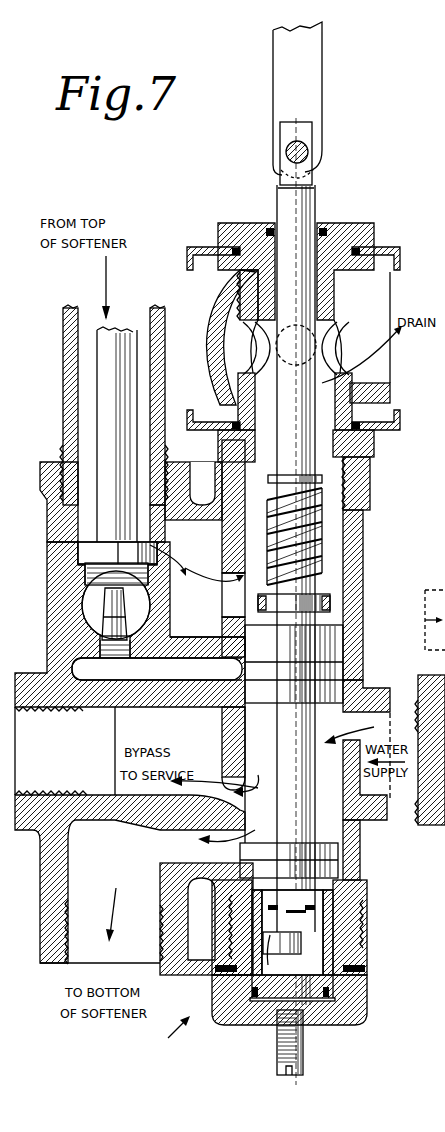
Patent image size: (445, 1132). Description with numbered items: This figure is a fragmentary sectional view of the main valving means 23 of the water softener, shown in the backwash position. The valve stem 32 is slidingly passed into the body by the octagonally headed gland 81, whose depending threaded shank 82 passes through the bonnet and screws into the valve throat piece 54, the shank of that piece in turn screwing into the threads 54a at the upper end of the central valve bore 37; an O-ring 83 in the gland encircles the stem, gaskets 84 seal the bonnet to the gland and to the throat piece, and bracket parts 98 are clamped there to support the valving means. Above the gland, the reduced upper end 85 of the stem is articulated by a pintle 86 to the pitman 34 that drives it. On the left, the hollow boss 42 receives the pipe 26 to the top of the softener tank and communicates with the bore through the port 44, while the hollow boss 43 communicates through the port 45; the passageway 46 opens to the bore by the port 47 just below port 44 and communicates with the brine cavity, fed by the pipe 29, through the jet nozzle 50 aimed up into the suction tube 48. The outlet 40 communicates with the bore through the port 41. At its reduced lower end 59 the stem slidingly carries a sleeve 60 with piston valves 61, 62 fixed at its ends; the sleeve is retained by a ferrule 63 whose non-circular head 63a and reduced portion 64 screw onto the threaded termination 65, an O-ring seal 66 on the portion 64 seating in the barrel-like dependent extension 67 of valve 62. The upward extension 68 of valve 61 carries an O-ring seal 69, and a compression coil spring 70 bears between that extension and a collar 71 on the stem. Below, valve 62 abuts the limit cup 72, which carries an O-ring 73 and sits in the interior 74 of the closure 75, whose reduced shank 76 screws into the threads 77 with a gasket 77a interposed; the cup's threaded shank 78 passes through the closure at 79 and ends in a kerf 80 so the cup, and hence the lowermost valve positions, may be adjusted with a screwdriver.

The main valving means 23 is at (168, 1039).
The pipe to top of softener tank 26 is at (63, 381).
The pipe to brine tank 29 is at (434, 603).
The valve stem 32 is at (277, 207).
The pitman 34 is at (316, 73).
The valve bore 37 is at (363, 560).
The outlet 40 is at (29, 673).
The port 41 is at (247, 775).
The hollow boss 42 is at (40, 462).
The hollow boss 43 is at (40, 963).
The port 44 is at (197, 581).
The port 45 is at (147, 896).
The passageway 46 is at (157, 670).
The port 47 is at (236, 650).
The suction tube 48 is at (100, 408).
The jet nozzle 50 is at (130, 612).
The valve throat piece 54 is at (356, 392).
The threads 54a is at (370, 496).
The reduced lower end of valve stem 59 is at (365, 818).
The sleeve 60 is at (265, 742).
The piston valve 61 is at (332, 652).
The piston valve 62 is at (338, 857).
The ferrule 63 is at (290, 944).
The non-circular head 63a is at (284, 962).
The reduced portion 64 is at (312, 930).
The threaded termination 65 is at (300, 898).
The O-ring seal 66 is at (262, 908).
The barrel-like dependent extension 67 is at (310, 913).
The upward extension 68 is at (332, 614).
The O-ring seal 69 is at (332, 601).
The compression coil spring 70 is at (320, 535).
The collar 71 is at (322, 479).
The limit cup 72 is at (360, 942).
The O-ring 73 is at (345, 1013).
The interior of closure 74 is at (345, 996).
The closure 75 is at (355, 1022).
The reduced shank 76 is at (365, 968).
The threads 77 is at (230, 1002).
The gasket 77a is at (225, 976).
The threaded shank 78 is at (282, 1050).
The threaded passage 79 is at (308, 1030).
The kerf 80 is at (288, 1078).
The gland 81 is at (372, 224).
The threaded shank 82 is at (240, 306).
The O-ring 83 is at (331, 226).
The gaskets 84 is at (216, 262).
The reduced upper end 85 is at (313, 183).
The pintle 86 is at (286, 152).
The horizontal portions of clips 98 is at (395, 256).